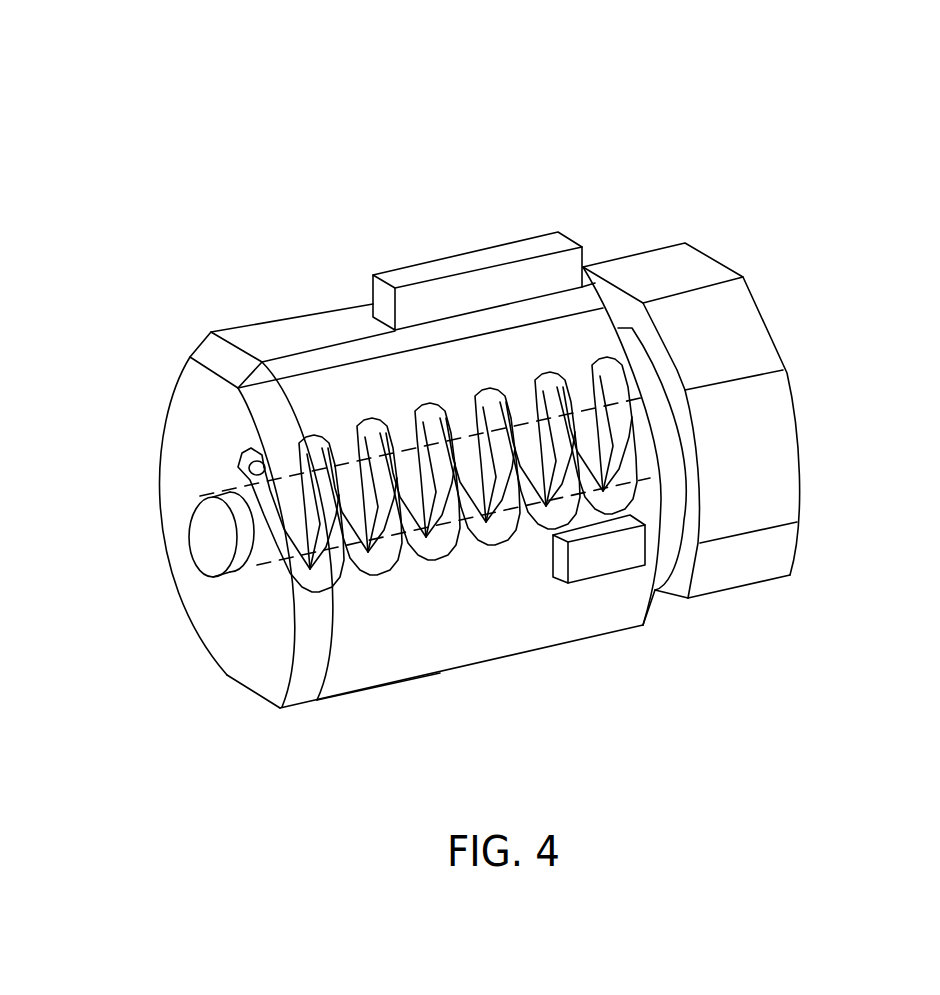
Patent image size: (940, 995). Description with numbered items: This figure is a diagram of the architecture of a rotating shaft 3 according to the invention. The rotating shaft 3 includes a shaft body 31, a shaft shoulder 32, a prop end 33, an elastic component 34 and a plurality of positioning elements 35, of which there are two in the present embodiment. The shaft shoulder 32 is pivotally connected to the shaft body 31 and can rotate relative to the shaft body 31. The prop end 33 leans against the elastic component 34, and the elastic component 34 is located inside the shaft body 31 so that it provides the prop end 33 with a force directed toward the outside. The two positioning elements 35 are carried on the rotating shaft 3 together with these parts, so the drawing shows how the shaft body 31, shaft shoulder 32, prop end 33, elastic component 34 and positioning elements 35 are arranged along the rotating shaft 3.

The rotating shaft 3 is at (173, 155).
The shaft body 31 is at (302, 333).
The shaft shoulder 32 is at (727, 347).
The prop end 33 is at (190, 533).
The elastic component 34 is at (427, 552).
The positioning elements 35 is at (498, 263).